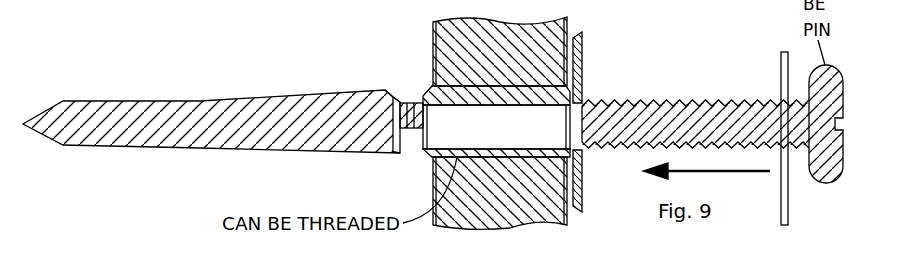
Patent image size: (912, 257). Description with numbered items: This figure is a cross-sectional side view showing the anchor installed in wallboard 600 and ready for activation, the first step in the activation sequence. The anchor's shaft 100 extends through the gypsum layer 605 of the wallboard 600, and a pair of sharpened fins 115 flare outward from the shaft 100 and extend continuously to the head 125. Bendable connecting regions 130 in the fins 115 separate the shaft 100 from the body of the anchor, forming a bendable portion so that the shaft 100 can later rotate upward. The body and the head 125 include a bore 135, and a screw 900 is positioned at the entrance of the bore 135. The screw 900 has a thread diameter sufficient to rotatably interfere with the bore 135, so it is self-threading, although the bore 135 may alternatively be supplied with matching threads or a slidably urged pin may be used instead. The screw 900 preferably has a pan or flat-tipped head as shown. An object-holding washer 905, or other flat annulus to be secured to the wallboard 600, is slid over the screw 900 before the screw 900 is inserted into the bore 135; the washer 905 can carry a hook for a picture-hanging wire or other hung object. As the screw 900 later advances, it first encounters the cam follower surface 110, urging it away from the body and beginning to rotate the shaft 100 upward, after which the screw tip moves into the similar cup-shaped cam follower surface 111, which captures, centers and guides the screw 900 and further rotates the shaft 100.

The shaft 100 is at (177, 170).
The cam follower surface 110 is at (362, 150).
The cam follower surface 111 is at (364, 92).
The sharpened fins 115 is at (415, 128).
The head 125 is at (583, 41).
The bendable connecting regions 130 is at (425, 84).
The bore 135 is at (572, 103).
The wallboard 600 is at (400, 33).
The gypsum layer 605 is at (460, 22).
The screw 900 is at (715, 104).
The object-holding washer 905 is at (781, 58).